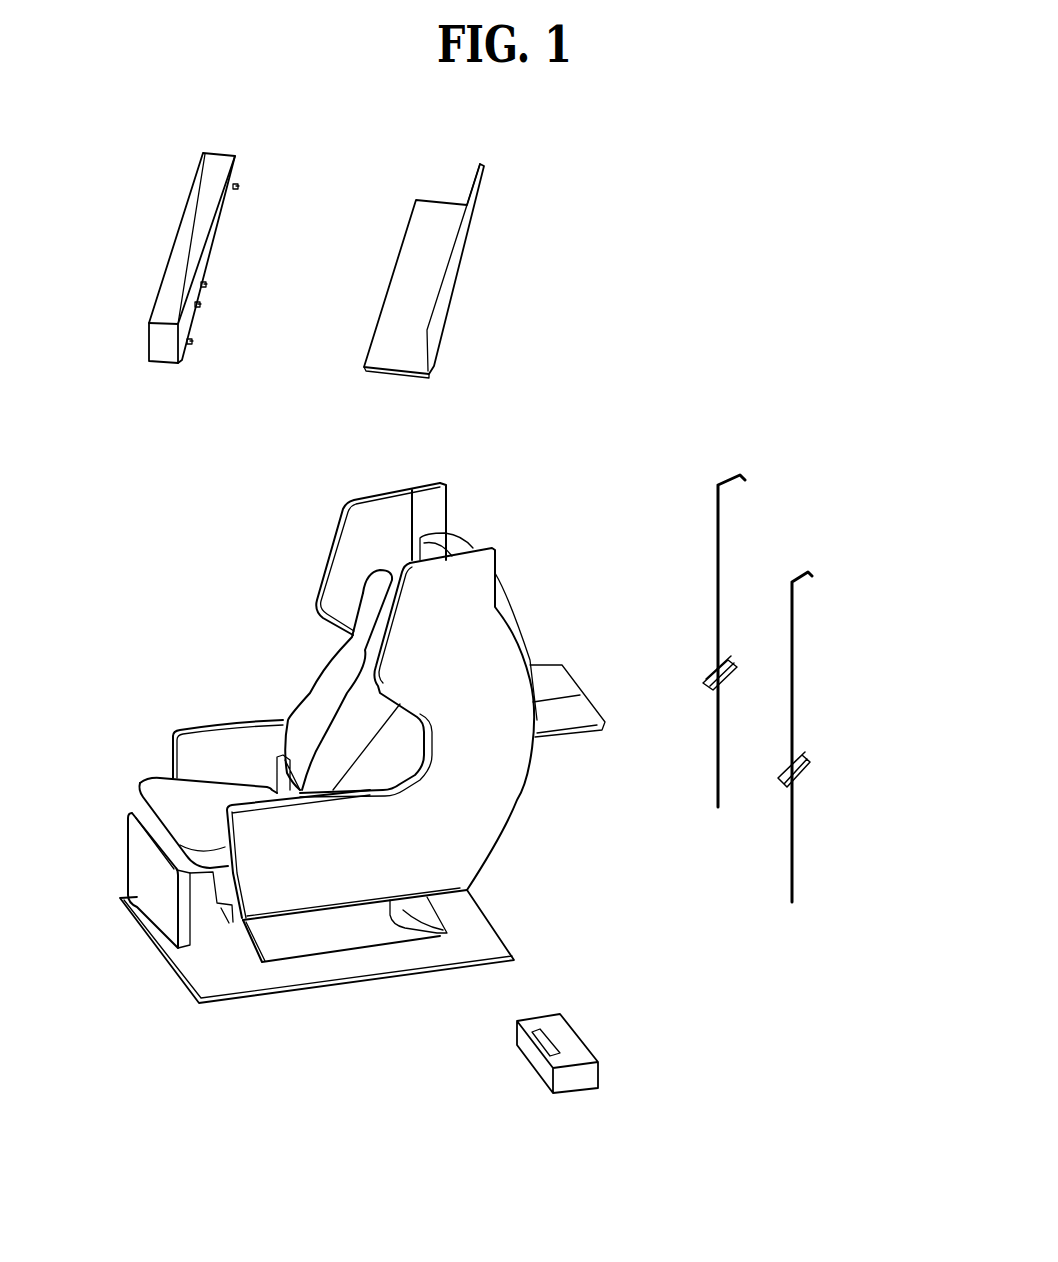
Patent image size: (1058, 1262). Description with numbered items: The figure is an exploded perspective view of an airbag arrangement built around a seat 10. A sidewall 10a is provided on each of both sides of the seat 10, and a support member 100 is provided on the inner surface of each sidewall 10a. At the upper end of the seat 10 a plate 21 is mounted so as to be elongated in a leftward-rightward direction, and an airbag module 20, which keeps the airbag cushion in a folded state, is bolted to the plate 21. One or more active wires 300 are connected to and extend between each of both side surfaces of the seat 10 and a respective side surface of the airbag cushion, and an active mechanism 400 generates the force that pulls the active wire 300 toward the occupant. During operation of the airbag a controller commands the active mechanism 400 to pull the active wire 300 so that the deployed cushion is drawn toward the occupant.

The seat 10 is at (363, 716).
The sidewall 10a is at (360, 524).
The airbag module 20 is at (187, 255).
The plate 21 is at (460, 256).
The support member 100 is at (708, 682).
The active wire 300 is at (717, 512).
The active mechanism 400 is at (595, 1047).